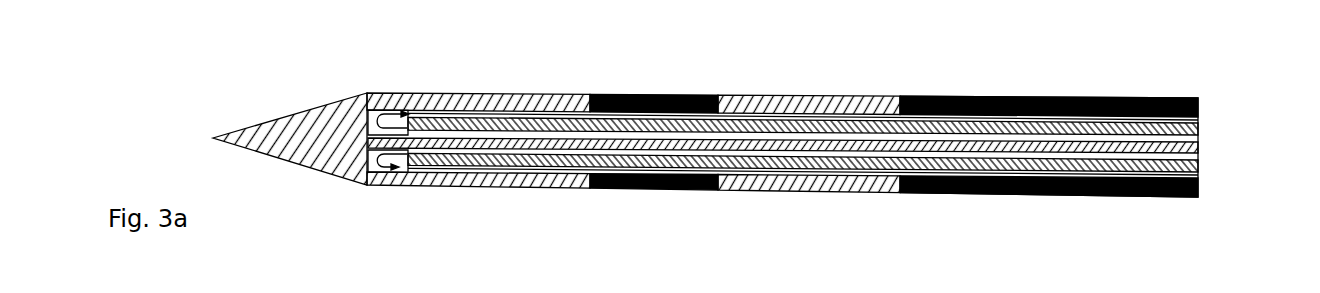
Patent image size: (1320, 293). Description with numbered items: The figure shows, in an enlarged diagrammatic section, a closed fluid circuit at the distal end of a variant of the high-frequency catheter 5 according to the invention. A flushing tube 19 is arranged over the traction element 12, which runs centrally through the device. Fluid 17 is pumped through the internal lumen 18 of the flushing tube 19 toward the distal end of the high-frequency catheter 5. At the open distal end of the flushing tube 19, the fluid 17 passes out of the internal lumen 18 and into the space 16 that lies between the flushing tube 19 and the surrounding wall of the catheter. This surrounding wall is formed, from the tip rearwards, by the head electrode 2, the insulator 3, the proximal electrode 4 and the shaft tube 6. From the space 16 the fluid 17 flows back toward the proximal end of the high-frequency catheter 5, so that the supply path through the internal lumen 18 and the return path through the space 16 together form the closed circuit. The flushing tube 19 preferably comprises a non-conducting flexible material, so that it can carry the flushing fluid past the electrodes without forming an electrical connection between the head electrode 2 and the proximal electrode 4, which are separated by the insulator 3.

The head electrode 2 is at (291, 113).
The insulator 3 is at (661, 96).
The proximal electrode 4 is at (849, 99).
The high-frequency catheter 5 is at (1211, 77).
The shaft tube 6 is at (1153, 98).
The traction element 12 is at (1030, 140).
The space 16 is at (990, 119).
The fluid 17 is at (448, 131).
The internal lumen 18 is at (578, 111).
The flushing tube 19 is at (762, 120).